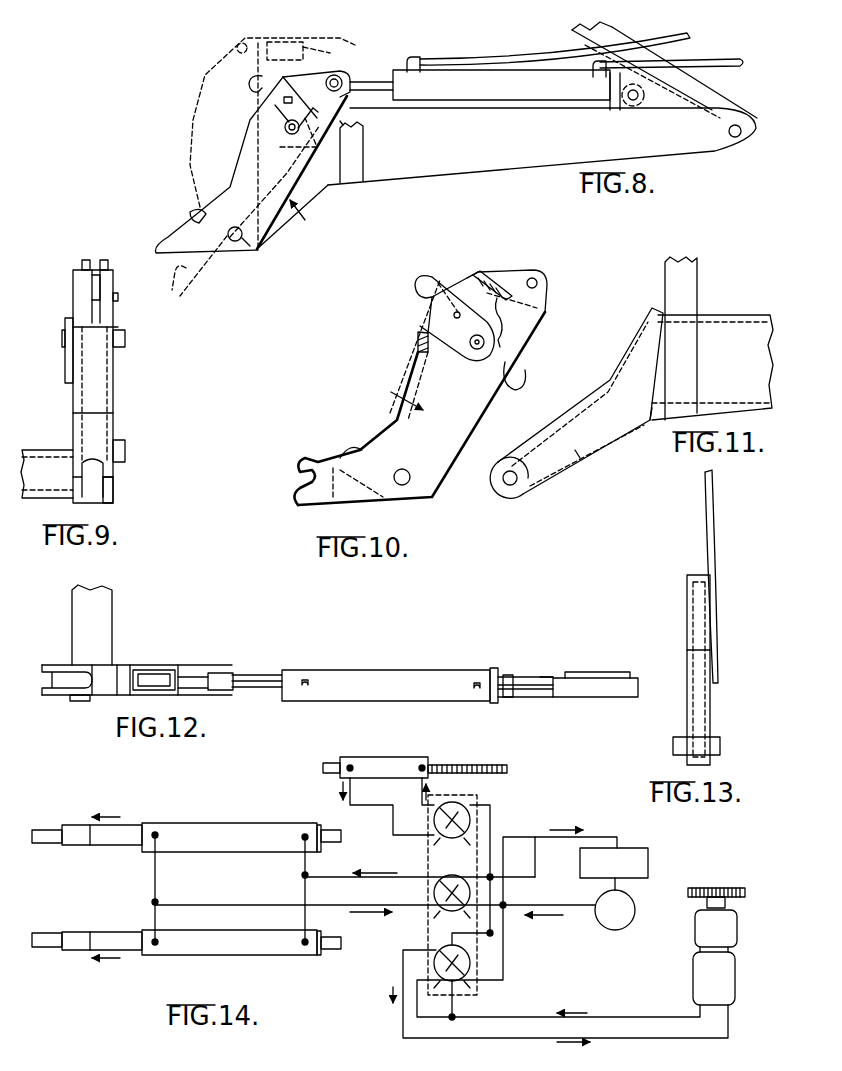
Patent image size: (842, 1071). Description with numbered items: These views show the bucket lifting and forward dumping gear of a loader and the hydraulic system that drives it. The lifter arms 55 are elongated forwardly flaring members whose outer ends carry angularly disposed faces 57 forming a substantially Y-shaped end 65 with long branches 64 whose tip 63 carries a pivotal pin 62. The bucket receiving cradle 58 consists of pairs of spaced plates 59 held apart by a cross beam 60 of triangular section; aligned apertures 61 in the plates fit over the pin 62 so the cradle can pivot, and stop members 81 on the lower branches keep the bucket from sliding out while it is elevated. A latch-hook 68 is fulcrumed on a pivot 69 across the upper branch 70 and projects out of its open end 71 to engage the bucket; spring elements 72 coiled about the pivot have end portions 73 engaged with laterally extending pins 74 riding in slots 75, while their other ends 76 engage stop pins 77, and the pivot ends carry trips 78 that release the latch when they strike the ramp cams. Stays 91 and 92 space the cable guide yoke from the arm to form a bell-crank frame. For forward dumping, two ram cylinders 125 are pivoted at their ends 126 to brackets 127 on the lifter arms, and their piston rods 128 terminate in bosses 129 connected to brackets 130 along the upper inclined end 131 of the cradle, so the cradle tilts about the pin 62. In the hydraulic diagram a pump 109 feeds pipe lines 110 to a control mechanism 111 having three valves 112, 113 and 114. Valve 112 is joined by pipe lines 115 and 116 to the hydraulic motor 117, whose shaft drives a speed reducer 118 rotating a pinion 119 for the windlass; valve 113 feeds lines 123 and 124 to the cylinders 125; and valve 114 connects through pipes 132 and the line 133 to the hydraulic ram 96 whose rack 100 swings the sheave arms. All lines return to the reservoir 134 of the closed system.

In FIG. 8, the lifter arms 55 is at (520, 160).
In FIG. 11, the lifter arms 55 is at (733, 325).
In FIG. 12, the lifter arms 55 is at (562, 690).
In FIG. 8, the angularly disposed faces 57 is at (300, 180).
In FIG. 11, the angularly disposed faces 57 is at (627, 350).
In FIG. 8, the bucket receiving cradle 58 is at (306, 216).
In FIG. 10, the bucket receiving cradle 58 is at (397, 394).
In FIG. 9, the spaced plates 59 is at (115, 378).
In FIG. 10, the spaced plates 59 is at (470, 410).
In FIG. 9, the cross beam 60 is at (33, 483).
In FIG. 10, the cross beam 60 is at (347, 507).
In FIG. 12, the cross beam 60 is at (103, 613).
In FIG. 8, the aligned apertures 61 is at (247, 243).
In FIG. 10, the aligned apertures 61 is at (402, 487).
In FIG. 8, the pivotal pin 62 is at (230, 242).
In FIG. 11, the pivotal pin 62 is at (513, 493).
In FIG. 13, the pivotal pin 62 is at (718, 745).
In FIG. 11, the tip 63 is at (493, 482).
In FIG. 11, the long branches 64 is at (575, 453).
In FIG. 8, the Y-shaped end 65 is at (163, 243).
In FIG. 9, the Y-shaped end 65 is at (115, 485).
In FIG. 10, the Y-shaped end 65 is at (305, 477).
In FIG. 11, the Y-shaped end 65 is at (630, 400).
In FIG. 13, the Y-shaped end 65 is at (698, 663).
In FIG. 8, the latch-hook 68 is at (249, 78).
In FIG. 9, the latch-hook 68 is at (93, 282).
In FIG. 10, the latch-hook 68 is at (423, 280).
In FIG. 9, the pivot 69 is at (63, 338).
In FIG. 10, the pivot 69 is at (483, 342).
In FIG. 10, the upper branch 70 is at (523, 327).
In FIG. 10, the open end 71 is at (468, 270).
In FIG. 8, the spring elements 72 is at (288, 99).
In FIG. 9, the spring elements 72 is at (116, 316).
In FIG. 8, the end portions 73 is at (283, 125).
In FIG. 8, the laterally extending pins 74 is at (280, 112).
In FIG. 10, the laterally extending pins 74 is at (453, 315).
In FIG. 8, the slots 75 is at (277, 103).
In FIG. 8, the other ends 76 is at (340, 123).
In FIG. 8, the stop pins 77 is at (313, 110).
In FIG. 9, the trips 78 is at (65, 373).
In FIG. 10, the trips 78 is at (513, 393).
In FIG. 8, the stop members 81 is at (193, 213).
In FIG. 9, the stop members 81 is at (125, 443).
In FIG. 10, the stop members 81 is at (350, 450).
In FIG. 8, the stay 91 is at (357, 153).
In FIG. 11, the stay 91 is at (687, 272).
In FIG. 13, the stay 91 is at (718, 532).
In FIG. 8, the stay 92 is at (567, 35).
In FIG. 14, the hydraulic ram 96 is at (377, 763).
In FIG. 14, the rack 100 is at (472, 763).
In FIG. 14, the hydraulic pump 109 is at (617, 918).
In FIG. 14, the pipe lines 110 is at (505, 950).
In FIG. 14, the control mechanism 111 is at (428, 928).
In FIG. 14, the valve 112 is at (483, 988).
In FIG. 14, the valve 113 is at (467, 892).
In FIG. 14, the valve 114 is at (463, 822).
In FIG. 14, the pipe line 115 is at (607, 1038).
In FIG. 14, the pipe line 116 is at (600, 1017).
In FIG. 14, the hydraulic motor 117 is at (707, 973).
In FIG. 14, the speed reducer 118 is at (725, 930).
In FIG. 14, the pinion 119 is at (733, 885).
In FIG. 8, the line 123 is at (727, 60).
In FIG. 12, the line 123 is at (485, 673).
In FIG. 14, the line 123 is at (340, 873).
In FIG. 8, the line 124 is at (512, 63).
In FIG. 12, the line 124 is at (310, 677).
In FIG. 14, the line 124 is at (345, 905).
In FIG. 8, the ram cylinders 125 is at (457, 77).
In FIG. 12, the ram cylinders 125 is at (400, 677).
In FIG. 14, the ram cylinders 125 is at (202, 833).
In FIG. 8, the ends 126 is at (613, 87).
In FIG. 12, the ends 126 is at (520, 683).
In FIG. 14, the ends 126 is at (323, 833).
In FIG. 8, the brackets 127 is at (647, 107).
In FIG. 12, the brackets 127 is at (542, 678).
In FIG. 8, the piston rods 128 is at (400, 52).
In FIG. 12, the piston rods 128 is at (260, 680).
In FIG. 14, the piston rods 128 is at (82, 835).
In FIG. 8, the bosses 129 is at (395, 45).
In FIG. 12, the bosses 129 is at (220, 680).
In FIG. 8, the brackets 130 is at (322, 77).
In FIG. 10, the brackets 130 is at (517, 278).
In FIG. 12, the brackets 130 is at (215, 697).
In FIG. 10, the upper inclined end 131 is at (502, 267).
In FIG. 14, the pipes 132 is at (420, 785).
In FIG. 14, the hydraulic line 133 is at (393, 815).
In FIG. 14, the reservoir 134 is at (643, 855).